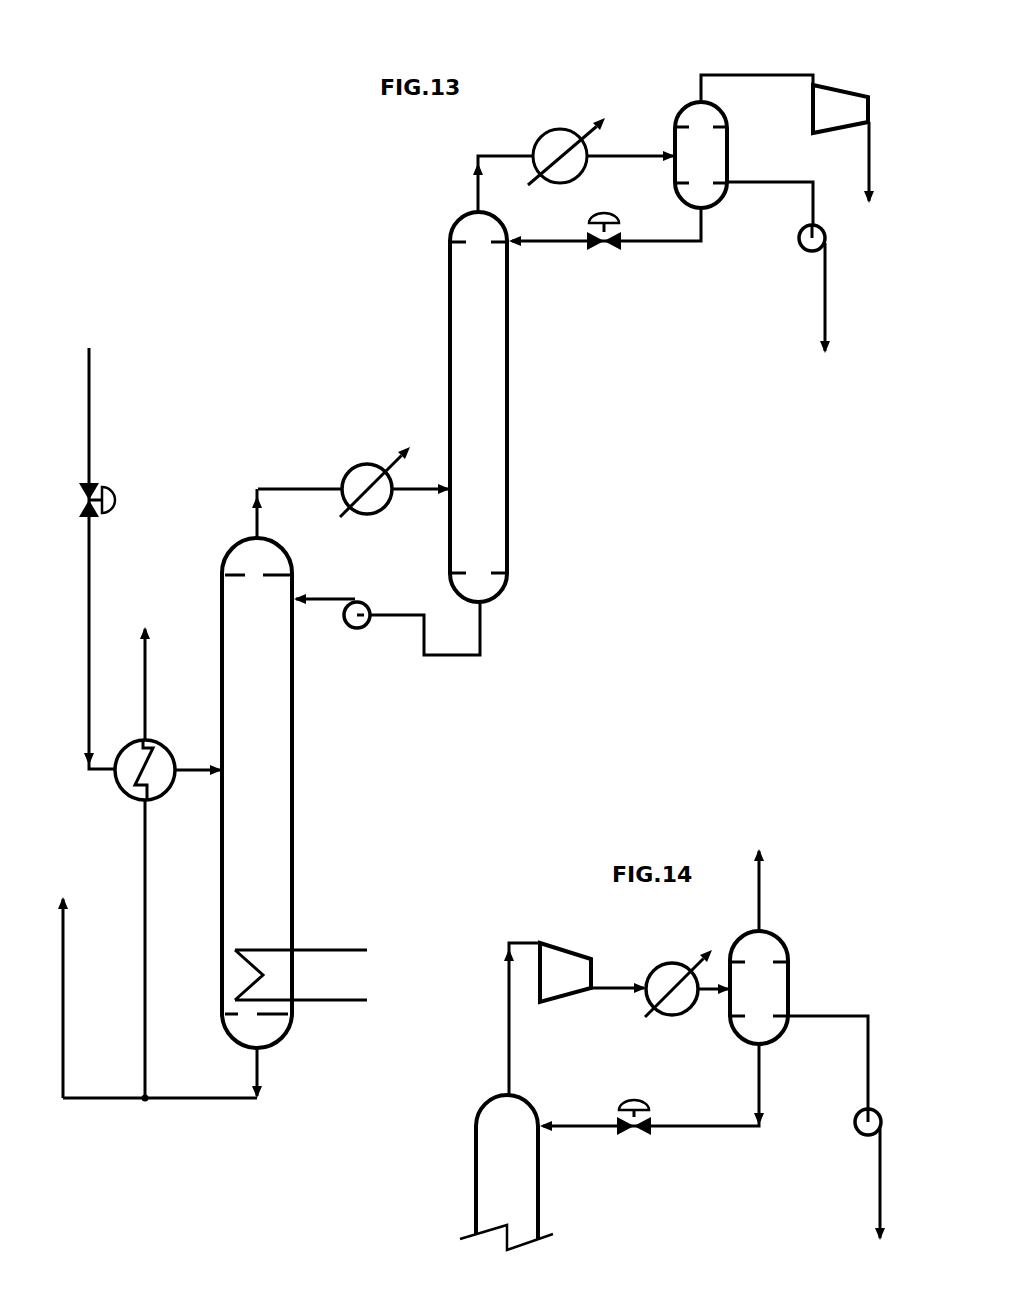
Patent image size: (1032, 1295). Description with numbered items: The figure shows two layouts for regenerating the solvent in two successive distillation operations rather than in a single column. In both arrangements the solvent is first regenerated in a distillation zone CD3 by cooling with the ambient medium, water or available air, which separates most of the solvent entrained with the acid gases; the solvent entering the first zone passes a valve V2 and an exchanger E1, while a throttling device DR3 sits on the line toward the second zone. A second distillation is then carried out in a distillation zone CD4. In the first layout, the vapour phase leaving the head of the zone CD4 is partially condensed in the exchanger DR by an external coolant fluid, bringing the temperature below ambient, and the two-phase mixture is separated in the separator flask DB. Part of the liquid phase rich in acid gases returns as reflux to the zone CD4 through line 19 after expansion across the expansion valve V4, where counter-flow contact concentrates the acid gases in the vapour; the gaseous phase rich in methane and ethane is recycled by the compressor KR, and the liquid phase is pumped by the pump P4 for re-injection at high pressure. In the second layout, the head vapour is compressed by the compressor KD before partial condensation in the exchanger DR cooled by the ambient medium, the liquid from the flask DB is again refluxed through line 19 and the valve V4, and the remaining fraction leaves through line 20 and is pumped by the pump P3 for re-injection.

In FIG. 13, the line 19 is at (697, 242).
In FIG. 14, the line 19 is at (742, 1127).
In FIG. 13, the line 20 is at (784, 183).
In FIG. 14, the line 20 is at (862, 1018).
In FIG. 13, the distillation zone CD3 is at (280, 787).
In FIG. 13, the distillation zone CD4 is at (498, 410).
In FIG. 14, the distillation zone CD4 is at (530, 1209).
In FIG. 13, the separator flask DB is at (715, 170).
In FIG. 14, the separator flask DB is at (775, 946).
In FIG. 13, the exchanger DR is at (574, 157).
In FIG. 14, the exchanger DR is at (687, 975).
In FIG. 13, the throttle device DR3 is at (354, 476).
In FIG. 13, the compressor KR is at (787, 134).
In FIG. 14, the compressor KD is at (575, 1006).
In FIG. 13, the pump P3 is at (825, 289).
In FIG. 14, the pump P3 is at (857, 1174).
In FIG. 13, the pump P4 is at (387, 615).
In FIG. 13, the valve V2 is at (108, 558).
In FIG. 13, the expansion valve V4 is at (604, 220).
In FIG. 14, the expansion valve V4 is at (634, 1137).
In FIG. 13, the heat exchanger E1 is at (168, 862).